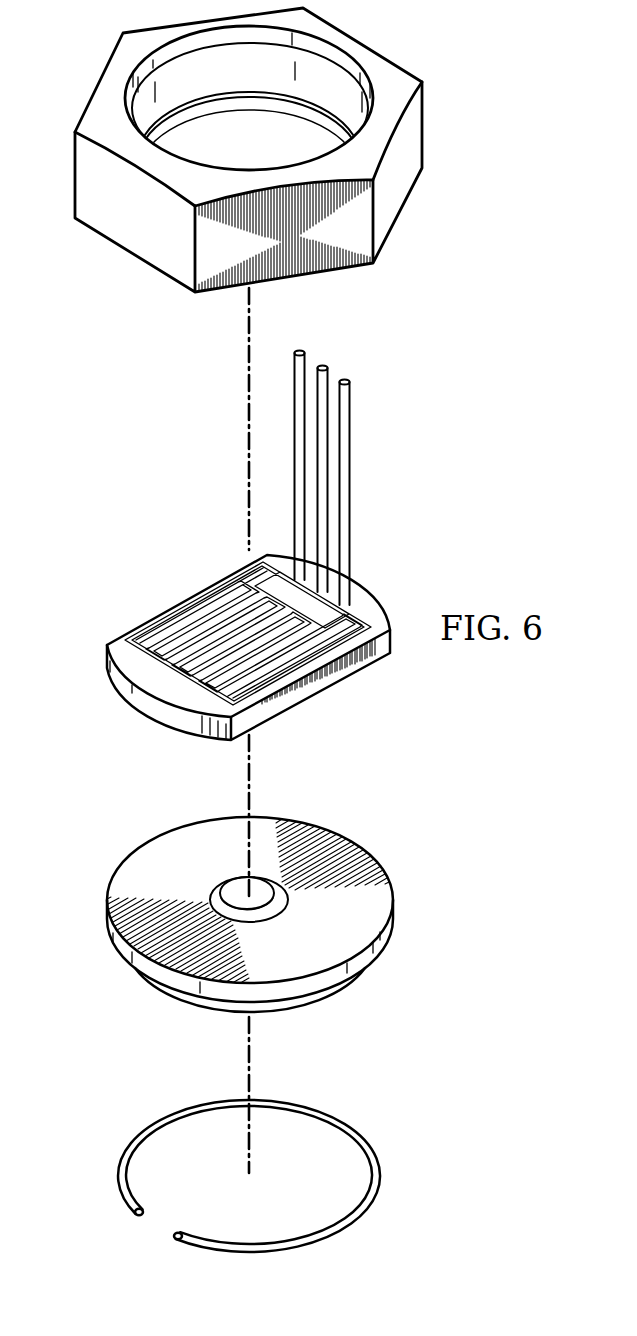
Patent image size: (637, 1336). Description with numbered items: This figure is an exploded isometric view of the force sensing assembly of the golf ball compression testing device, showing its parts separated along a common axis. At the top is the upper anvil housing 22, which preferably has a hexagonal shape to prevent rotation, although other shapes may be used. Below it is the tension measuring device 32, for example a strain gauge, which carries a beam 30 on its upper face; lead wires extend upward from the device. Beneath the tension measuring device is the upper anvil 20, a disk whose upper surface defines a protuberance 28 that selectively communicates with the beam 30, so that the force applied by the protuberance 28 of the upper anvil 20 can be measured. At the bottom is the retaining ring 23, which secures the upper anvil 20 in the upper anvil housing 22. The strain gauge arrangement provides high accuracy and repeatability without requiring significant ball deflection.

The upper anvil housing 22 is at (99, 83).
The beam 30 is at (193, 599).
The tension measuring device 32 is at (118, 688).
The upper anvil 20 is at (121, 863).
The protuberance 28 is at (240, 886).
The retaining ring 23 is at (118, 1178).